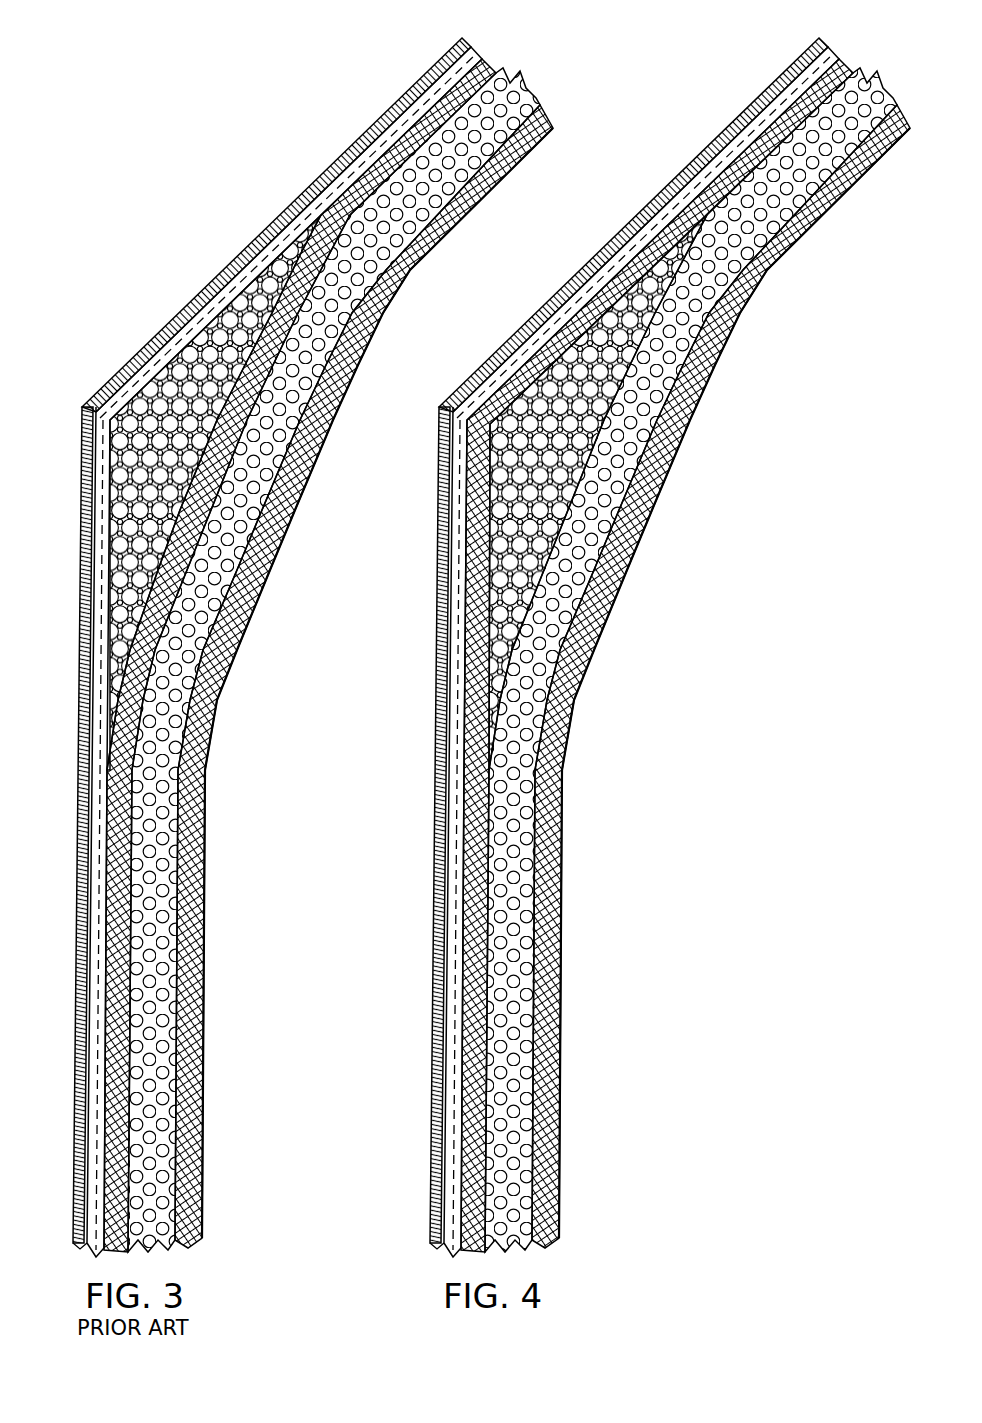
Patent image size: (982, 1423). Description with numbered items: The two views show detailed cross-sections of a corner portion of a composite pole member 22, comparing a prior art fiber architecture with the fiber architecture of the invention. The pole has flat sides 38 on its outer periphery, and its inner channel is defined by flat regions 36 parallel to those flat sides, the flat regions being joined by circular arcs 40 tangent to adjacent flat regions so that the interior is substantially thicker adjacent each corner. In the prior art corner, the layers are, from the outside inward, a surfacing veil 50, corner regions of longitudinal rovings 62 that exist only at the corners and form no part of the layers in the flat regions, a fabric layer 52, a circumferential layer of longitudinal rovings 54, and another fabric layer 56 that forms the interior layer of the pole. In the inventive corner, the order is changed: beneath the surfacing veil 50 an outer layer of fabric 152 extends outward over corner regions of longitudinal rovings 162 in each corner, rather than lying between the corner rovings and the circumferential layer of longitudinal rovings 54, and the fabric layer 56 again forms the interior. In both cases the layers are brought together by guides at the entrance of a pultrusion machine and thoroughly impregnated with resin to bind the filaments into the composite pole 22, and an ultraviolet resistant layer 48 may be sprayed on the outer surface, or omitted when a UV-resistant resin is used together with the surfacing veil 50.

In FIG. 3, the pole member 22 is at (352, 96).
In FIG. 4, the pole member 22 is at (709, 96).
In FIG. 3, the flat regions 36 is at (520, 152).
In FIG. 4, the flat regions 36 is at (877, 152).
In FIG. 3, the flat sides 38 is at (392, 105).
In FIG. 4, the flat sides 38 is at (749, 105).
In FIG. 3, the circular arcs 40 is at (334, 421).
In FIG. 4, the circular arcs 40 is at (691, 421).
In FIG. 3, the ultraviolet resistant layer 48 is at (90, 530).
In FIG. 4, the ultraviolet resistant layer 48 is at (447, 530).
In FIG. 3, the surfacing veil 50 is at (100, 633).
In FIG. 4, the surfacing veil 50 is at (457, 633).
In FIG. 3, the fabric layer 52 is at (122, 757).
In FIG. 3, the circumferential layer of longitudinal rovings 54 is at (162, 814).
In FIG. 4, the circumferential layer of longitudinal rovings 54 is at (519, 814).
In FIG. 3, the fabric layer 56 is at (204, 893).
In FIG. 4, the fabric layer 56 is at (561, 893).
In FIG. 3, the corner regions of longitudinal rovings 62 is at (157, 437).
In FIG. 4, the outer layer of fabric 152 is at (480, 757).
In FIG. 4, the corner regions of longitudinal rovings 162 is at (514, 437).